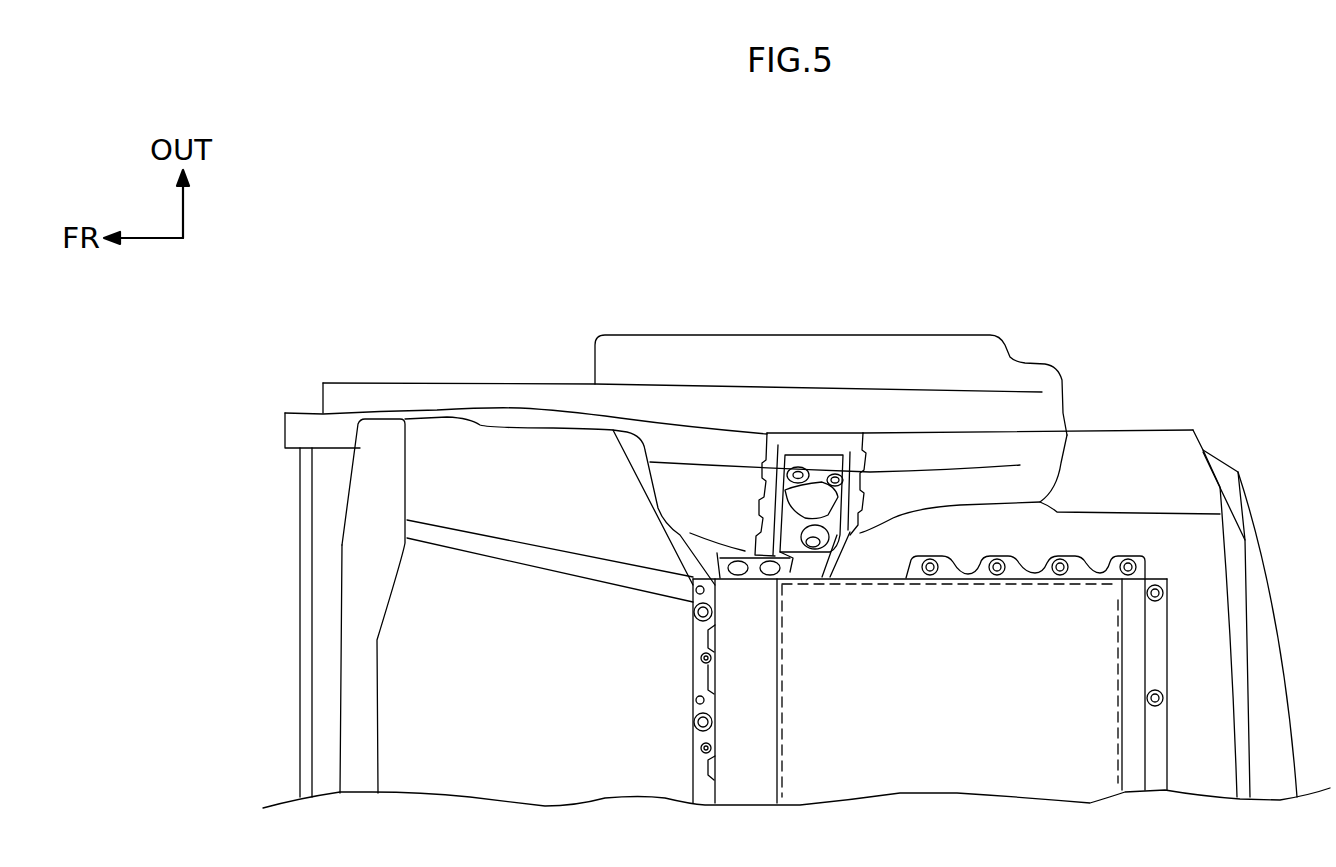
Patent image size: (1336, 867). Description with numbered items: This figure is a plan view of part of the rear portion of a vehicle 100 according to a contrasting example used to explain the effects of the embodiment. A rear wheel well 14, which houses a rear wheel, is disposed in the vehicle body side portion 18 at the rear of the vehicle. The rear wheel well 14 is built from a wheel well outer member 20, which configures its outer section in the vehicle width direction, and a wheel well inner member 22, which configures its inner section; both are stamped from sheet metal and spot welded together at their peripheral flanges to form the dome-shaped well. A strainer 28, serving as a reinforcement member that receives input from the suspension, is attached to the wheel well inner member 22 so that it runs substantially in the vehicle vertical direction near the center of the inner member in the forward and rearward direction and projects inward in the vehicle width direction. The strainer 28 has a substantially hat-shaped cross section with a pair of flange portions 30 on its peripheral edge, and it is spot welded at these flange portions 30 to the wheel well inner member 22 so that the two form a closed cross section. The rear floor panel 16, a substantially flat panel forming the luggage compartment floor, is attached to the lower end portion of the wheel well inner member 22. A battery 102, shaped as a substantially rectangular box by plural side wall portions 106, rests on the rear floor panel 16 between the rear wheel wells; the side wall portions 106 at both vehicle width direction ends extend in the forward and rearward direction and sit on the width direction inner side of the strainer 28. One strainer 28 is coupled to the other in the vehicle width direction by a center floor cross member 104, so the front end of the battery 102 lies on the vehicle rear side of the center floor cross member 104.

The vehicle 100 is at (917, 252).
The rear wheel well 14 is at (1031, 360).
The rear floor panel 16 is at (546, 773).
The vehicle body side portion 18 is at (455, 364).
The wheel well outer member 20 is at (745, 350).
The wheel well inner member 22 is at (888, 495).
The strainer 28 is at (705, 541).
The flange portion 30 is at (867, 573).
The battery 102 is at (1168, 638).
The center floor cross member 104 is at (728, 676).
The side wall portion 106 is at (907, 580).